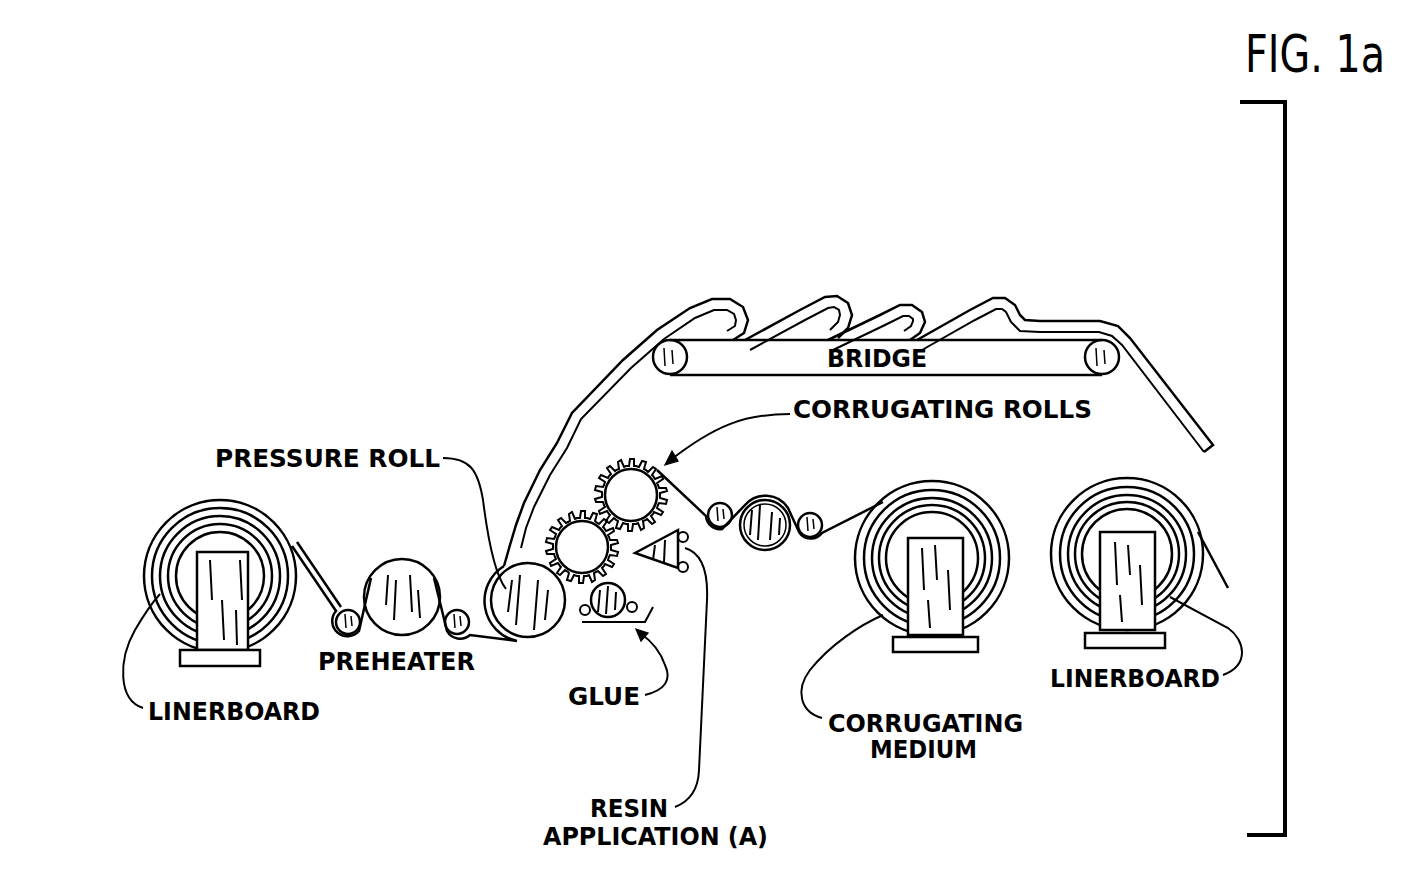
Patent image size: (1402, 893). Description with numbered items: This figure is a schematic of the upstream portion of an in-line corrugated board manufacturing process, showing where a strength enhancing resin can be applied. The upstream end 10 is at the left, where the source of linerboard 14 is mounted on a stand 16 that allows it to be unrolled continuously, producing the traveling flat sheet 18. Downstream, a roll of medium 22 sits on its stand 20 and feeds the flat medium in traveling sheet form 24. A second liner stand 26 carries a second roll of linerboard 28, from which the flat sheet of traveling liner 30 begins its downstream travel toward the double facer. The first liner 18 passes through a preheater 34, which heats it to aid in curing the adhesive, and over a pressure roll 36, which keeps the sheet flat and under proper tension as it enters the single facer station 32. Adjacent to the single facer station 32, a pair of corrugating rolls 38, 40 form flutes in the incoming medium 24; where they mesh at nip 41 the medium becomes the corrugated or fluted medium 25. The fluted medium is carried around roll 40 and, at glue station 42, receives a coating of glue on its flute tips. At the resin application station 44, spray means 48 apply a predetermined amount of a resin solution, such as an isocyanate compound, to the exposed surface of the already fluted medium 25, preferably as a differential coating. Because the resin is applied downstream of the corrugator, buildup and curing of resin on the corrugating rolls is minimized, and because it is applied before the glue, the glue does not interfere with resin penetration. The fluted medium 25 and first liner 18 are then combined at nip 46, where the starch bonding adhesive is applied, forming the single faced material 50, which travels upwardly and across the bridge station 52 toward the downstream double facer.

The upstream end 10 is at (283, 400).
The source of linerboard 14 is at (172, 538).
The stand 16 is at (228, 613).
The traveling flat sheet 18 is at (317, 587).
The stand 20 is at (930, 597).
The roll of medium 22 is at (945, 490).
The flat medium in traveling sheet form 24 is at (838, 530).
The corrugated or fluted medium 25 is at (598, 417).
The second liner stand 26 is at (1127, 613).
The second roll of linerboard 28 is at (1068, 507).
The flat sheet of traveling liner 30 is at (1210, 550).
The single facer station 32 is at (511, 465).
The preheater 34 is at (395, 580).
The pressure roll 36 is at (530, 623).
The corrugating roll 38 is at (568, 560).
The corrugating roll 40 is at (617, 508).
The nip 41 is at (612, 528).
The glue station 42 is at (610, 621).
The resin application station 44 is at (677, 590).
The nip 46 is at (576, 617).
The spray means 48 is at (661, 566).
The single faced material 50 is at (568, 390).
The bridge station 52 is at (1038, 352).